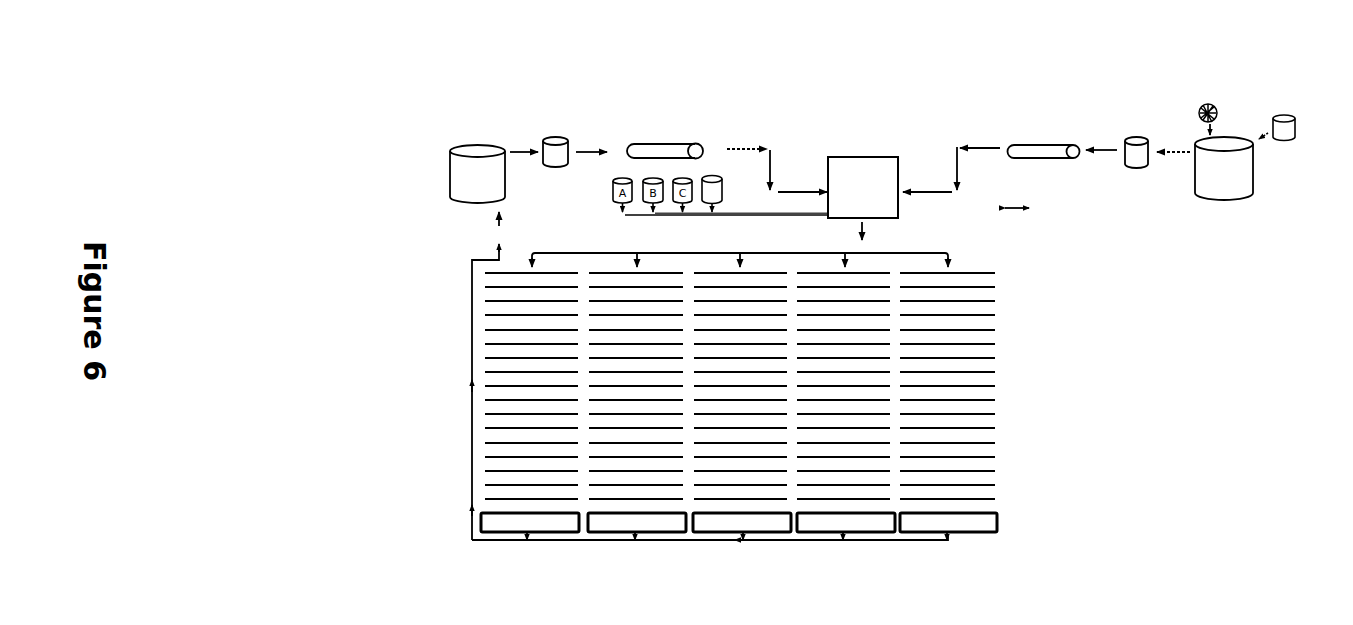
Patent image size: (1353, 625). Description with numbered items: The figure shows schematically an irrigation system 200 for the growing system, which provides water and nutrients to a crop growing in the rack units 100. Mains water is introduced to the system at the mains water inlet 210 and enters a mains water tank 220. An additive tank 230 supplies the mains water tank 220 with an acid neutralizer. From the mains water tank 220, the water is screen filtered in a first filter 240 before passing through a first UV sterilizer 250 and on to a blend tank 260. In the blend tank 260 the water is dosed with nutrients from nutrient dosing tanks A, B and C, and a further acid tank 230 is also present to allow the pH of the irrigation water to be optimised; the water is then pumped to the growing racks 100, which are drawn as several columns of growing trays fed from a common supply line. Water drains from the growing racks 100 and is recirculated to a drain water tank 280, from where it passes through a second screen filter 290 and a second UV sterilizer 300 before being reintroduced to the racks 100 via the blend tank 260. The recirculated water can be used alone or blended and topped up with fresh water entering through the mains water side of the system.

The rack units 100 is at (478, 435).
The irrigation system 200 is at (971, 114).
The mains water inlet 210 is at (1212, 105).
The mains water tank 220 is at (1228, 178).
The additive tank 230 is at (722, 192).
The first filter 240 is at (1133, 163).
The first UV sterilizer 250 is at (1043, 147).
The blend tank 260 is at (860, 170).
The drain water tank 280 is at (472, 175).
The second screen filter 290 is at (558, 150).
The second UV sterilizer 300 is at (673, 150).